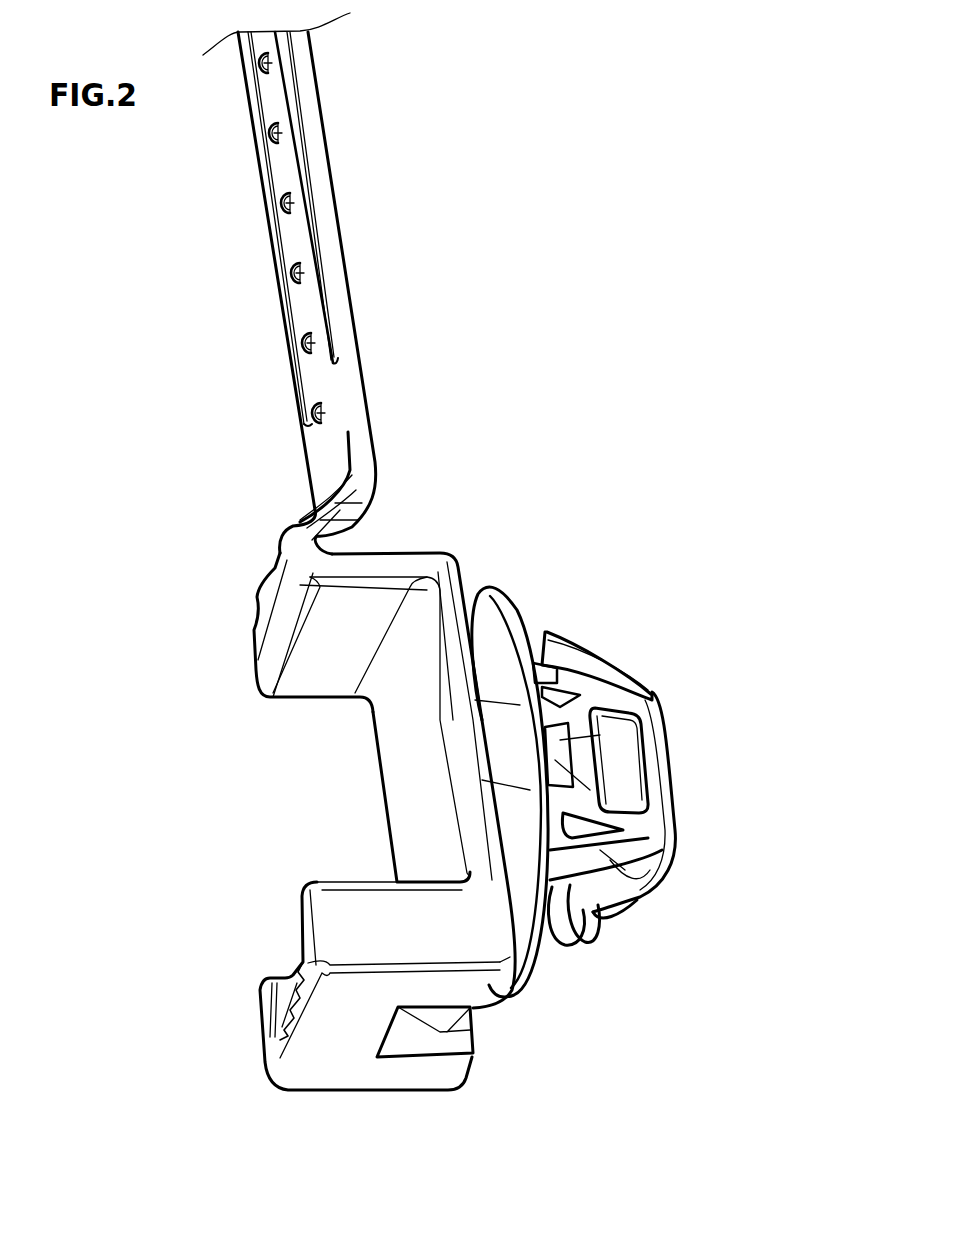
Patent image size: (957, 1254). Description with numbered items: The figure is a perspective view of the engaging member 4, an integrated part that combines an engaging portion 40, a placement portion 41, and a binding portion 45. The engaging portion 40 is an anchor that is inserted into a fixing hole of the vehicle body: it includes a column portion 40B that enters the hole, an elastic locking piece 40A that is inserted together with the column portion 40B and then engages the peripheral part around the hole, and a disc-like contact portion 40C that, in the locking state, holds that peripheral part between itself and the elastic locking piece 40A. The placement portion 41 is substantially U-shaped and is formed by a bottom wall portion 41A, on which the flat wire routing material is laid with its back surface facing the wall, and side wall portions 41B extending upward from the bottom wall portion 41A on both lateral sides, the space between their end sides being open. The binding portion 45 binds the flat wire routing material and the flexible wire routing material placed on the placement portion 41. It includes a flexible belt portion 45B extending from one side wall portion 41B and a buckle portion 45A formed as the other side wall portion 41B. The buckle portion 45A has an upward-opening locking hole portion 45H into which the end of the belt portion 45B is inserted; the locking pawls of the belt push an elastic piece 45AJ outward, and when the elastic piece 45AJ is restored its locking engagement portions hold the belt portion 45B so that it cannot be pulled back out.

The engaging member 4 is at (200, 523).
The binding portion 45 is at (345, 241).
The belt portion 45B is at (323, 185).
The locking hole portion 45H is at (300, 965).
The buckle portion 45A is at (424, 1030).
The elastic piece 45AJ is at (408, 1022).
The placement portion 41 is at (456, 552).
The side wall portion 41B is at (397, 565).
The bottom wall portion 41A is at (398, 782).
The engaging portion 40 is at (657, 692).
The elastic locking piece 40A is at (553, 640).
The column portion 40B is at (583, 780).
The contact portion 40C is at (495, 622).